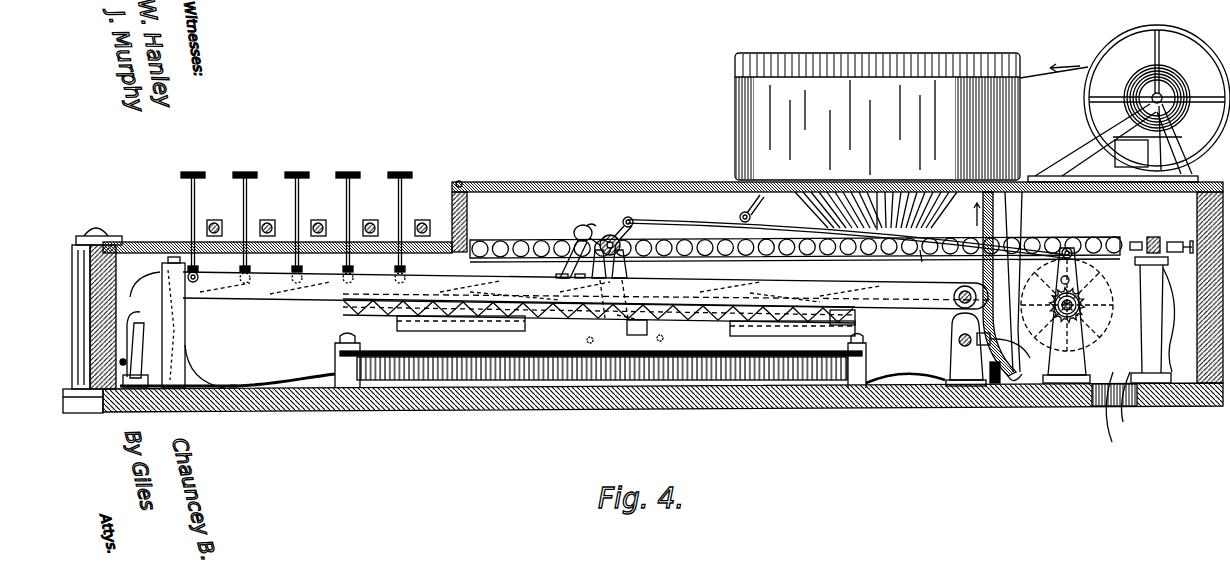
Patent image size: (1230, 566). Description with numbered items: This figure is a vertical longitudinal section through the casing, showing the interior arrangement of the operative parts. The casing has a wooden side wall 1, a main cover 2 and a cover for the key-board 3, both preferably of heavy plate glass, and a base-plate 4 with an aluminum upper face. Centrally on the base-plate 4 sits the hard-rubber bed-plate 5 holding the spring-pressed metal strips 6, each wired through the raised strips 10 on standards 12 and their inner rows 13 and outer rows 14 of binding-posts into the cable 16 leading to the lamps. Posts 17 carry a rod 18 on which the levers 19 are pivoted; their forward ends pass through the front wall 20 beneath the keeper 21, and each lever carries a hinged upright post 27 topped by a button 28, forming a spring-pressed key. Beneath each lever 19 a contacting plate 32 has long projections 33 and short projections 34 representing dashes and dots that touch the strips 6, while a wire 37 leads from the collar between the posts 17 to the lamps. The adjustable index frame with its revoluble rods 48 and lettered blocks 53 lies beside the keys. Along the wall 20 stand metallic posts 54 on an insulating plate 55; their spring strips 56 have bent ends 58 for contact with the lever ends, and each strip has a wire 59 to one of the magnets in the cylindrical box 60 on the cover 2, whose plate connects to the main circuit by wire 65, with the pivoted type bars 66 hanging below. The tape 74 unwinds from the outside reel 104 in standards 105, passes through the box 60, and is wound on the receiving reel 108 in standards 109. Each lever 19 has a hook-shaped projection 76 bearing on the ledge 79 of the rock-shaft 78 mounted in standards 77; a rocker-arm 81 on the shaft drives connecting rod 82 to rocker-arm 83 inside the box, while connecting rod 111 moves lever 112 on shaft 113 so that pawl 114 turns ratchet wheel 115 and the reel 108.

The side wall 1 is at (92, 338).
The main cover 2 is at (606, 182).
The cover for the key-board 3 is at (143, 242).
The base-plate 4 is at (856, 408).
The bed-plate 5 is at (336, 356).
The metal strips 6 is at (347, 392).
The strips 10 is at (1153, 237).
The standards 12 is at (1158, 360).
The inner rows of binding-posts 13 is at (1136, 242).
The outer rows of binding-posts 14 is at (1176, 242).
The cable 16 is at (1181, 320).
The posts 17 is at (966, 349).
The rod 18 is at (965, 286).
The levers 19 is at (272, 297).
The wall 20 is at (186, 327).
The keeper 21 is at (168, 260).
The upright post 27 is at (252, 194).
The button 28 is at (294, 172).
The contacting plate 32 is at (343, 312).
The long projections 33 is at (458, 332).
The short projections 34 is at (648, 330).
The wire 37 is at (1009, 358).
The revoluble rods 48 is at (222, 222).
The blocks 53 is at (318, 220).
The metallic posts 54 is at (143, 334).
The plate 55 is at (163, 390).
The spring strips 56 is at (122, 330).
The bent ends 58 is at (141, 338).
The wire 59 is at (273, 383).
The cylindrical box 60 is at (877, 116).
The wire 65 is at (1024, 200).
The bars 66 is at (800, 208).
The tape 74 is at (1062, 80).
The hook-shaped projection 76 is at (580, 242).
The standards 77 is at (625, 262).
The rock-shaft 78 is at (609, 230).
The ledge 79 is at (574, 232).
The rocker-arm 81 is at (629, 217).
The connecting rod 82 is at (706, 222).
The rocker-arm 83 is at (752, 204).
The outside reel 104 is at (1118, 55).
The standards 105 is at (1172, 122).
The receiving reel 108 is at (1100, 299).
The standards 109 is at (1068, 382).
The connecting rod 111 is at (927, 264).
The lever 112 is at (1073, 256).
The shaft 113 is at (1085, 306).
The pawl 114 is at (1061, 282).
The ratchet wheel 115 is at (1080, 316).